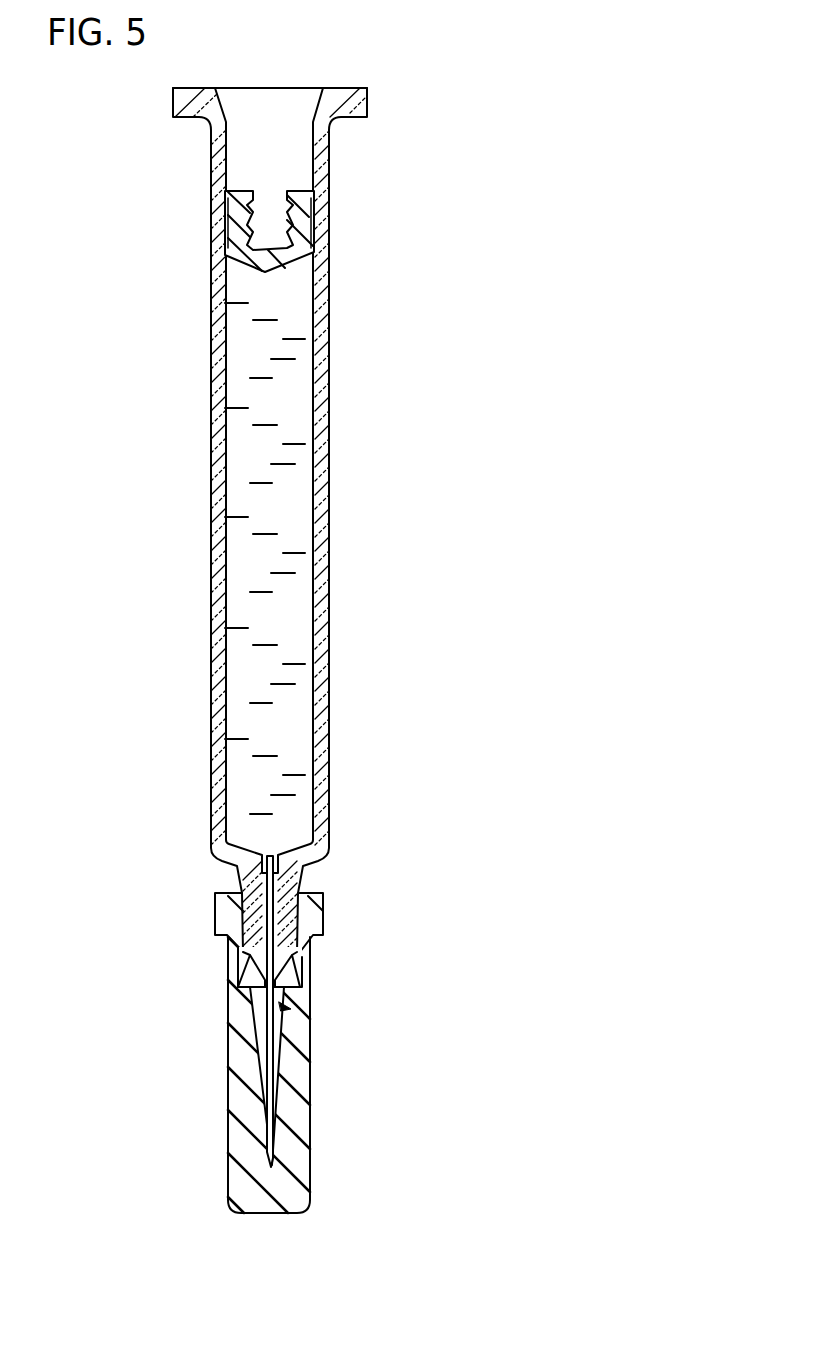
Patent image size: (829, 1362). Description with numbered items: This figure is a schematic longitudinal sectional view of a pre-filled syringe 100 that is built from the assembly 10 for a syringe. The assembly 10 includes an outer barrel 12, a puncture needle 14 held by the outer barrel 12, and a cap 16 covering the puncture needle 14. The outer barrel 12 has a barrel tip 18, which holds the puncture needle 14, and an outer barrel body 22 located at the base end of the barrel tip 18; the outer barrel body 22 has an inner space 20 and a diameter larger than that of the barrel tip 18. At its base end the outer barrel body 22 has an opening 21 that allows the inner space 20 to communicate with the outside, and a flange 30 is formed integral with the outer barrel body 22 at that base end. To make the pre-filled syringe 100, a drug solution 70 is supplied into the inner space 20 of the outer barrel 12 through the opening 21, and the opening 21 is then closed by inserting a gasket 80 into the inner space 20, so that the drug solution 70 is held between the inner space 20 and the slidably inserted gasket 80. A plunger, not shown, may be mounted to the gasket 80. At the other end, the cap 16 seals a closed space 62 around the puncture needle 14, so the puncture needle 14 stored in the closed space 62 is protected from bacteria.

The pre-filled syringe 100 is at (111, 98).
The assembly for a syringe 10 is at (359, 599).
The outer barrel 12 is at (345, 329).
The outer barrel body 22 is at (322, 434).
The inner space 20 is at (224, 583).
The flange 30 is at (358, 100).
The opening 21 is at (314, 118).
The drug solution 70 is at (253, 452).
The gasket 80 is at (302, 228).
The cap 16 is at (312, 1120).
The barrel tip 18 is at (297, 953).
The closed space 62 is at (280, 1005).
The puncture needle 14 is at (271, 1028).